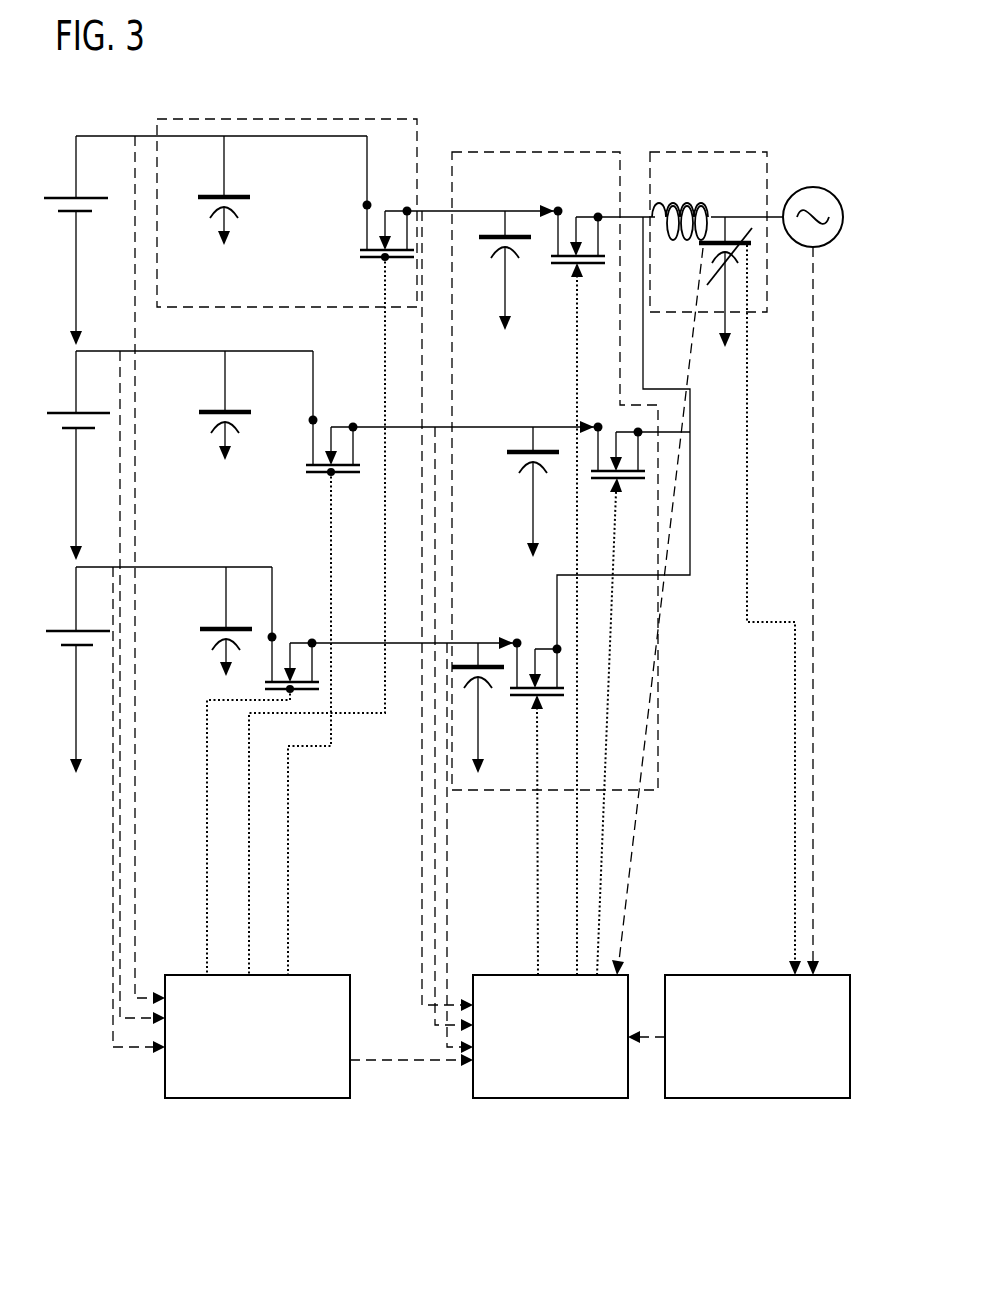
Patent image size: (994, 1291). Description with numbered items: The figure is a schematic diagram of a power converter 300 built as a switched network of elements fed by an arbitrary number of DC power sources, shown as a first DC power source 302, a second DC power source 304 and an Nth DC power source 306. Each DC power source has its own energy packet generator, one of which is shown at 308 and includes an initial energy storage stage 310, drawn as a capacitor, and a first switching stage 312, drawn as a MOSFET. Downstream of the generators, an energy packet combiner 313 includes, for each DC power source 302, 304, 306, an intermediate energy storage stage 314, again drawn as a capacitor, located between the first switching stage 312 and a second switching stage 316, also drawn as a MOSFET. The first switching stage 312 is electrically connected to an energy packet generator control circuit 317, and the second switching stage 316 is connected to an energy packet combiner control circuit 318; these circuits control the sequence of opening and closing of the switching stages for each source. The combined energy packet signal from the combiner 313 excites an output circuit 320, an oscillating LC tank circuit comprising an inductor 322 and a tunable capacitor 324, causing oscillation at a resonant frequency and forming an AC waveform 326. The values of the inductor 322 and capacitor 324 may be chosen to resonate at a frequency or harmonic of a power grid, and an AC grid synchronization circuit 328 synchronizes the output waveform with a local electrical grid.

The power converter 300 is at (520, 70).
The DC power source V1 302 is at (83, 213).
The DC power source V2 304 is at (83, 430).
The DC power source VN 306 is at (83, 647).
The energy packet generator 308 is at (318, 118).
The initial energy storage stage 310 is at (207, 201).
The first switching stage 312 is at (373, 259).
The energy packet combiner 313 is at (557, 151).
The intermediate energy storage stage 314 is at (488, 241).
The second switching stage 316 is at (568, 265).
The energy packet generator control circuit 317 is at (322, 1100).
The energy packet combiner control circuit 318 is at (597, 1100).
The output circuit 320 is at (738, 150).
The inductor 322 is at (675, 200).
The capacitor 324 is at (717, 233).
The AC waveform 326 is at (207, 416).
The AC grid synchronization circuit 328 is at (207, 633).